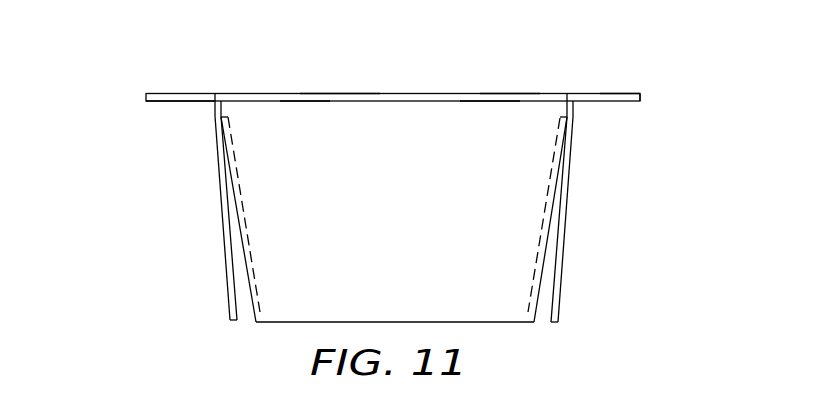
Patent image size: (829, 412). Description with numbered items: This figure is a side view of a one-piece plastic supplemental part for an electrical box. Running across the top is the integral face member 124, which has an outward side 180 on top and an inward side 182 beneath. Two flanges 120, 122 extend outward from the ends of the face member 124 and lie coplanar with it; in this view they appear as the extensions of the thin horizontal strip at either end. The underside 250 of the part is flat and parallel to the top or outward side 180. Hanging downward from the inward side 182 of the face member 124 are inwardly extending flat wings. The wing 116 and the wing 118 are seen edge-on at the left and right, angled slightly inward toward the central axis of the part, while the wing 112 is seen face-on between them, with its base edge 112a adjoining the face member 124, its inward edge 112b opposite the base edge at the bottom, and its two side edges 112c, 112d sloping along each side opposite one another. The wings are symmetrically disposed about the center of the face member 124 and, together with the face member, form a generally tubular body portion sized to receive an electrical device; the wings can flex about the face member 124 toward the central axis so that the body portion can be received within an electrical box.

The wing 112 is at (394, 211).
The base edge 112a is at (293, 102).
The inward edge 112b is at (481, 320).
The side edge 112c is at (240, 205).
The side edge 112d is at (548, 201).
The wing 116 is at (230, 273).
The wing 118 is at (557, 249).
The flange 120 is at (155, 93).
The flange 122 is at (627, 98).
The face member 124 is at (343, 92).
The outward side 180 is at (512, 93).
The inward side 182 is at (487, 102).
The underside 250 is at (163, 102).